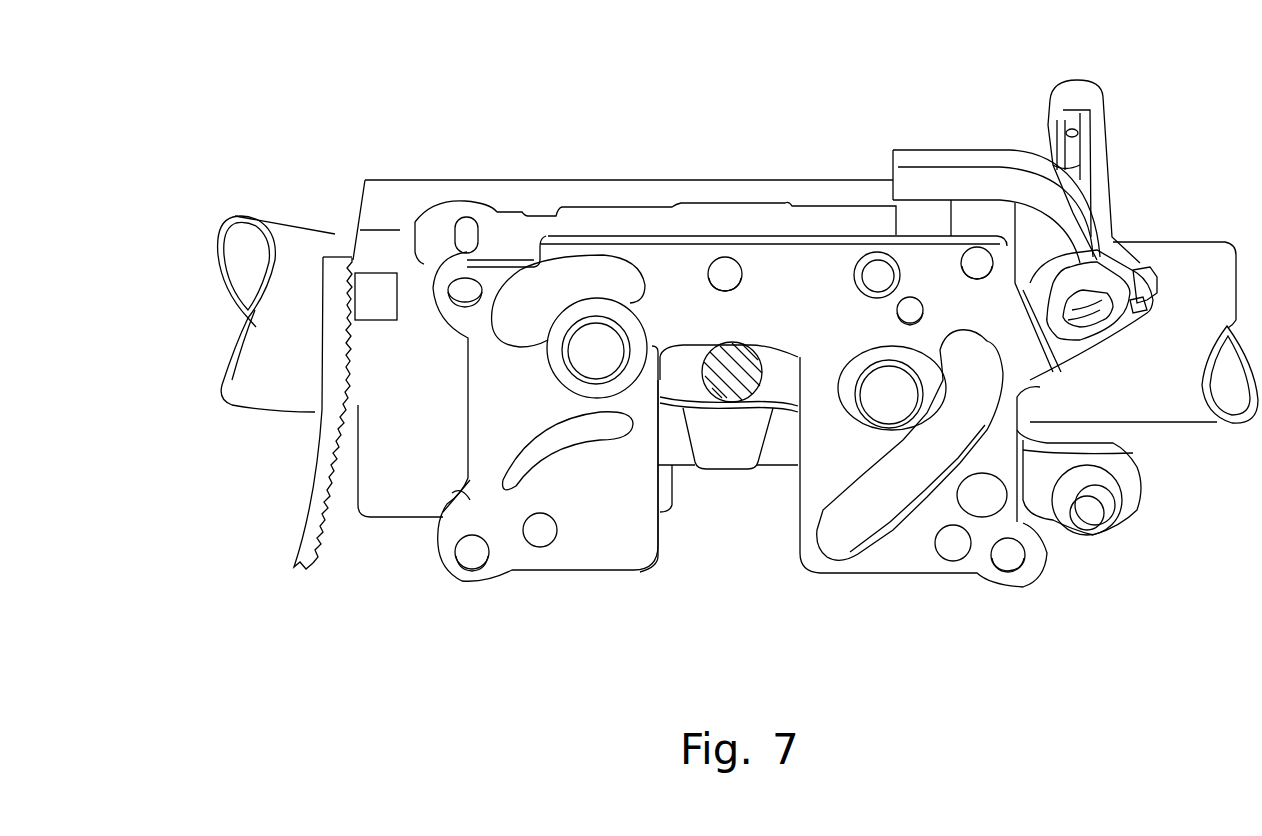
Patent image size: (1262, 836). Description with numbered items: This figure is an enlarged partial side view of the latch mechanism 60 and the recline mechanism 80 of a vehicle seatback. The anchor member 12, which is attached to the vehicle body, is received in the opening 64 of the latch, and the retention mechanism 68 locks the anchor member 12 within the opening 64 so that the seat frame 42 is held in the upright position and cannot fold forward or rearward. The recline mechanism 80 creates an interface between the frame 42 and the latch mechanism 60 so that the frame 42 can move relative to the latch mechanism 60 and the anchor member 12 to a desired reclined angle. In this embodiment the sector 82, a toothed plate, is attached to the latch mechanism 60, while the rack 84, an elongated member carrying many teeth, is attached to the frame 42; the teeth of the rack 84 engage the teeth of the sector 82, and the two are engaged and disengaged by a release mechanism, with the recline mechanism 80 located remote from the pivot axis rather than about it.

The latch mechanism 60 is at (745, 233).
The anchor member 12 is at (774, 375).
The seat frame 42 is at (307, 257).
The sector 82 is at (376, 286).
The recline mechanism 80 is at (324, 340).
The rack 84 is at (318, 487).
The retention mechanism 68 is at (713, 470).
The opening 64 is at (737, 532).